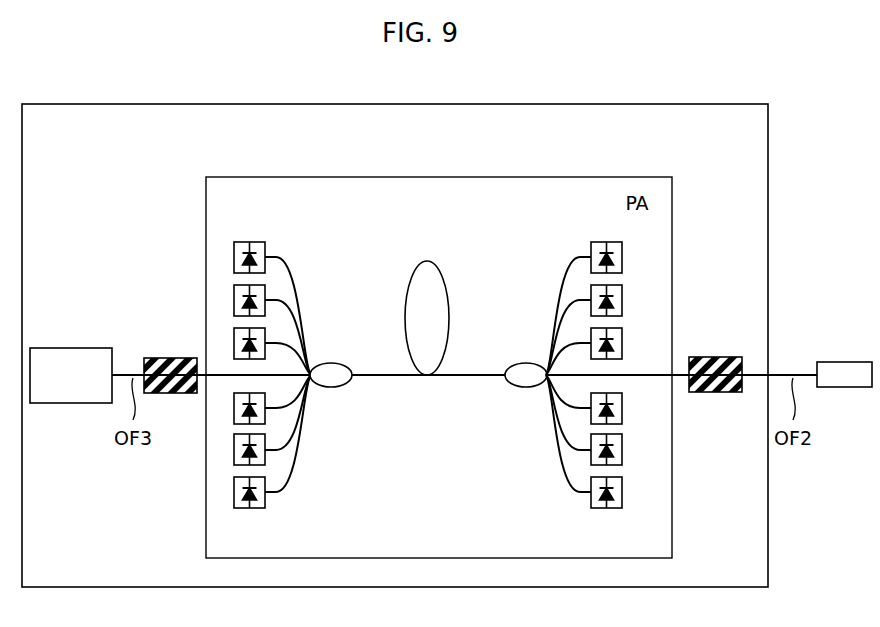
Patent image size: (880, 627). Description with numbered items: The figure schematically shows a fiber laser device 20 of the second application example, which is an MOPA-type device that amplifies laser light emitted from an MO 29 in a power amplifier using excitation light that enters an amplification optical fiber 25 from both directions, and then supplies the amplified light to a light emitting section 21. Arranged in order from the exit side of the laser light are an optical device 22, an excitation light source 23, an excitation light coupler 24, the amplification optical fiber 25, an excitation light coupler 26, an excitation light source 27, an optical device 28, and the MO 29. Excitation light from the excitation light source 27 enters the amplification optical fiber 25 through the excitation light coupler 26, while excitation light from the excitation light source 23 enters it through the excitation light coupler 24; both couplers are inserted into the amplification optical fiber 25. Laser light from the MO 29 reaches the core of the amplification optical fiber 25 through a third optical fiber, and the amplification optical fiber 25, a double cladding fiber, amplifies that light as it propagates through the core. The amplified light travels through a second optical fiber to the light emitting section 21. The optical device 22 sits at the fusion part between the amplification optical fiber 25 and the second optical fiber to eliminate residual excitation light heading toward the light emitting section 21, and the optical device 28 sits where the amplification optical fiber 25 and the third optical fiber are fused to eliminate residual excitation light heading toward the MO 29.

The fiber laser device 20 is at (768, 137).
The light emitting section 21 is at (852, 362).
The optical device 22 is at (713, 357).
The excitation light source 23 is at (596, 242).
The excitation light coupler 24 is at (525, 363).
The amplification optical fiber 25 is at (423, 262).
The excitation light coupler 26 is at (327, 363).
The excitation light source 27 is at (252, 242).
The optical device 28 is at (170, 358).
The MO 29 is at (68, 348).